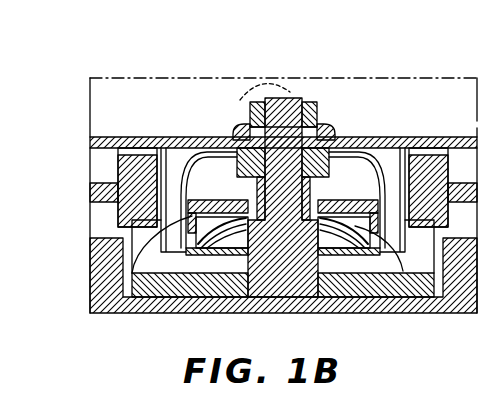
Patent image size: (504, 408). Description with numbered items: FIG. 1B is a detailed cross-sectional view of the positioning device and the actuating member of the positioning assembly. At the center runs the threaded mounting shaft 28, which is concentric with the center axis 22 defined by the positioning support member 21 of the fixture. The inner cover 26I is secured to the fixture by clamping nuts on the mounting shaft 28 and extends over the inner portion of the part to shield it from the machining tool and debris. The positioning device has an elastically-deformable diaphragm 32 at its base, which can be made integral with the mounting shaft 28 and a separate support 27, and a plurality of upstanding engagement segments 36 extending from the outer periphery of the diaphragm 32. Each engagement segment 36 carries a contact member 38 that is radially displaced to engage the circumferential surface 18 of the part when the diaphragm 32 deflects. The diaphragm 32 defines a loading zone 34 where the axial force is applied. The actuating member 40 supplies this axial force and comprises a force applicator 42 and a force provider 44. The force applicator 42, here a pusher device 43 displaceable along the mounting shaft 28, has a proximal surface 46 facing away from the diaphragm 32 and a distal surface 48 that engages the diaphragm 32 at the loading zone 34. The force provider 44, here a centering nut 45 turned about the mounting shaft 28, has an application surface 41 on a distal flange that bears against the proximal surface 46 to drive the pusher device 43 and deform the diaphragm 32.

The inner cover 26I is at (132, 112).
The circumferential surface 18 is at (403, 157).
The contact member 38 is at (430, 153).
The support 27 is at (423, 280).
The positioning support member 21 is at (330, 253).
The force applicator 42 is at (348, 190).
The pusher device 43 is at (160, 228).
The actuating member 40 is at (228, 170).
The proximal surface 46 is at (210, 187).
The engagement segment 36 is at (186, 204).
The diaphragm 32 is at (212, 233).
The loading zone 34 is at (190, 236).
The distal surface 48 is at (377, 233).
The application surface 41 is at (250, 257).
The threaded mounting shaft 28 is at (300, 262).
The center axis 22 is at (276, 82).
The force provider 44 is at (330, 138).
The centering nut 45 is at (250, 148).